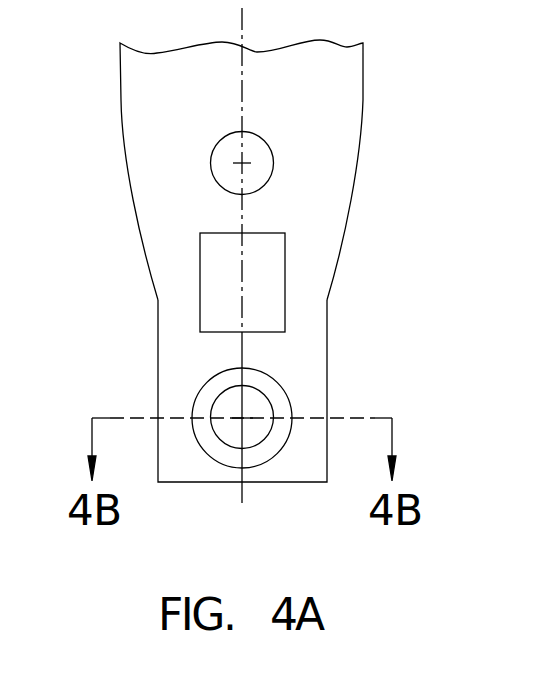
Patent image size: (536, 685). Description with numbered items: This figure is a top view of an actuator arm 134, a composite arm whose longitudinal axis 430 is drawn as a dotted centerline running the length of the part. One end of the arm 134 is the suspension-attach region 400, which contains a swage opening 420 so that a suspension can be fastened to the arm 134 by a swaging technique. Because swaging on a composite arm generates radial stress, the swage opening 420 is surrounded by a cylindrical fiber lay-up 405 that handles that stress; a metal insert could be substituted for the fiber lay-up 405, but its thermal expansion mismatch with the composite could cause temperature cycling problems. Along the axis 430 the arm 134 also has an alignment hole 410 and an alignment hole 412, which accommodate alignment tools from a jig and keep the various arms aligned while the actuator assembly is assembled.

The actuator arm 134 is at (364, 130).
The suspension-attach region 400 is at (195, 482).
The cylindrical fiber lay-up 405 is at (291, 402).
The alignment hole 410 is at (284, 258).
The alignment hole 412 is at (215, 152).
The swage opening 420 is at (213, 406).
The longitudinal axis 430 is at (242, 30).